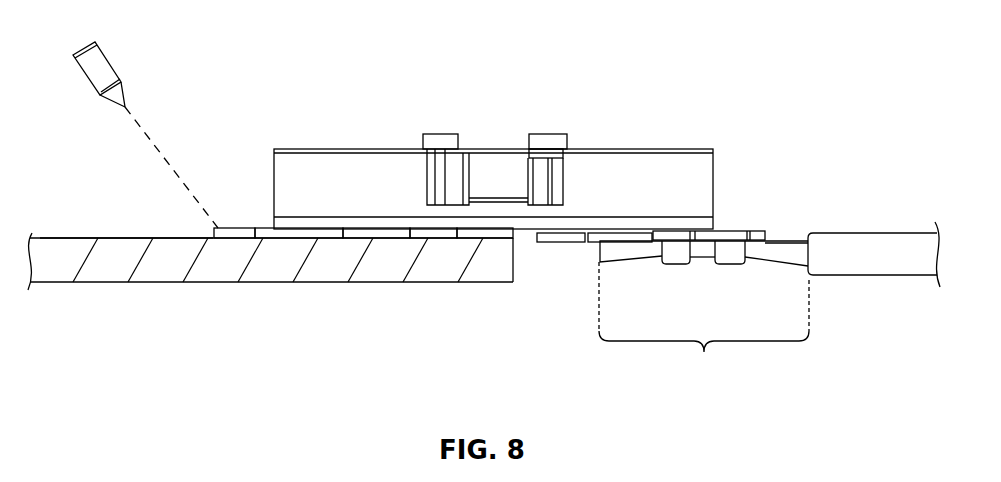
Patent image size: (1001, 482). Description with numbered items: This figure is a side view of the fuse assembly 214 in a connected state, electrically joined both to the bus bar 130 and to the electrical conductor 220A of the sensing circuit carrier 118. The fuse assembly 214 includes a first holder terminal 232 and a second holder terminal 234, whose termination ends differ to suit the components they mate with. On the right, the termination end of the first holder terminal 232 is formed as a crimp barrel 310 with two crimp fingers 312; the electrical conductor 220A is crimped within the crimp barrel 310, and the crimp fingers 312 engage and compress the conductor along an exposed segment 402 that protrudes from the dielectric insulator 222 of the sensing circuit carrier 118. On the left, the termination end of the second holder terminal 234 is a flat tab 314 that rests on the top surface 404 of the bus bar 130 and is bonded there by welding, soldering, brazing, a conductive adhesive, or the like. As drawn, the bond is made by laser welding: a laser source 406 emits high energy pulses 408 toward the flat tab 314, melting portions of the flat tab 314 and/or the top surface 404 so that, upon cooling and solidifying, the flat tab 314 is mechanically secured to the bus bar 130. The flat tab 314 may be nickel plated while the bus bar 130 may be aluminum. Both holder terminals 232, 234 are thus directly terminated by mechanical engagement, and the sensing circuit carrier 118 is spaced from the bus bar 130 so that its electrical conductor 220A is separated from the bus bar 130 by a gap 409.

The sensing circuit carrier 118 is at (898, 226).
The bus bar 130 is at (148, 265).
The fuse assembly 214 is at (392, 132).
The electrical conductor 220A is at (615, 253).
The dielectric insulator 222 is at (883, 243).
The first holder terminal 232 is at (728, 233).
The second holder terminal 234 is at (238, 228).
The crimp barrel 310 is at (754, 250).
The crimp fingers 312 is at (686, 252).
The flat tab 314 is at (255, 234).
The exposed segment 402 is at (704, 321).
The top surface 404 is at (97, 238).
The laser source 406 is at (100, 77).
The high energy pulses 408 is at (148, 134).
The gap 409 is at (542, 278).